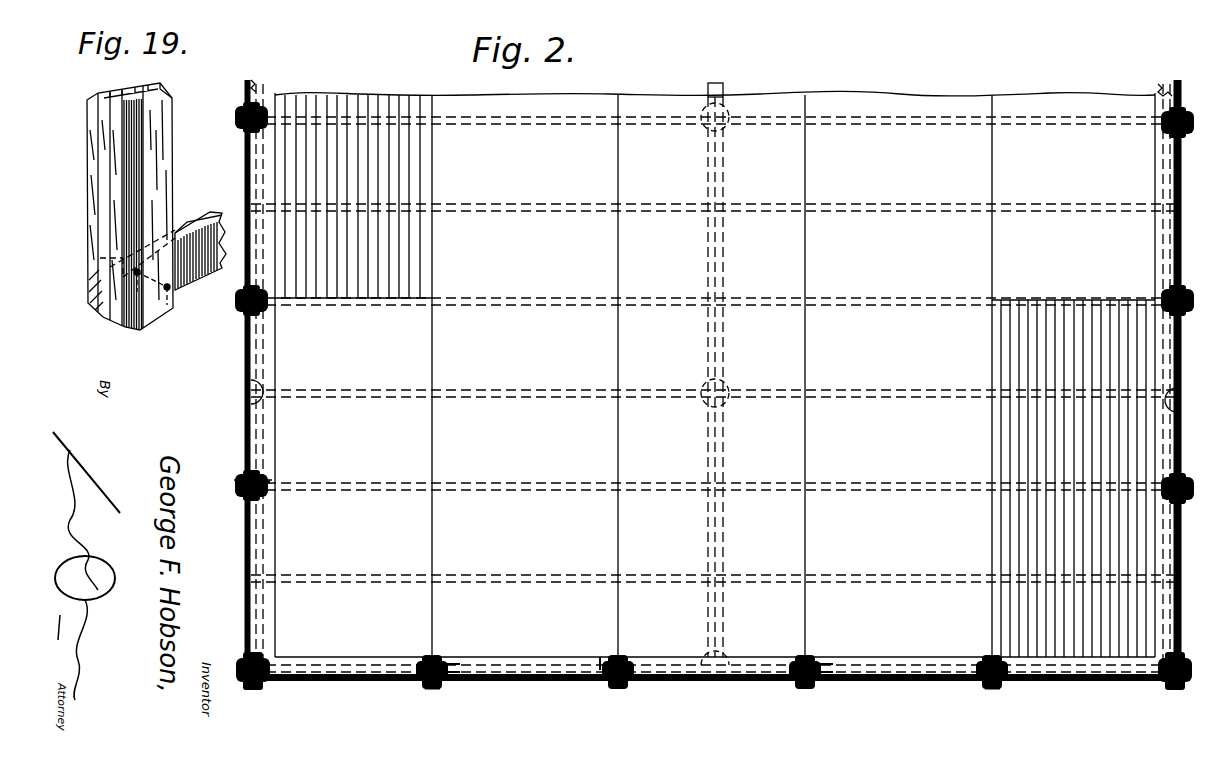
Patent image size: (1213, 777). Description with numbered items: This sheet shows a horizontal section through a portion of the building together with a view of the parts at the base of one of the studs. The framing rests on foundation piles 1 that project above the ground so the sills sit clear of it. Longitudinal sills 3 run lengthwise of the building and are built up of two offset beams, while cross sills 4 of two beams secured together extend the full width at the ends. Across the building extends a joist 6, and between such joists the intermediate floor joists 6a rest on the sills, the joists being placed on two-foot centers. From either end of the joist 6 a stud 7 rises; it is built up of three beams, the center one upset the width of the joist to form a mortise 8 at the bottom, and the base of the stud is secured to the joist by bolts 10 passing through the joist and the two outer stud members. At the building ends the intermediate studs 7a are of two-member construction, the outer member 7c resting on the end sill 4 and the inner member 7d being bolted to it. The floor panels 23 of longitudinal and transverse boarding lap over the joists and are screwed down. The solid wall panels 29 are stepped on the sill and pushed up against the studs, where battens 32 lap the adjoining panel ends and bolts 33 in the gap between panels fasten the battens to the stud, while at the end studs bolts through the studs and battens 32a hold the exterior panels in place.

In FIG. 2, the foundation pile 1 is at (242, 112).
In FIG. 2, the longitudinal sill 3 is at (725, 358).
In FIG. 2, the cross sill 4 is at (768, 670).
In FIG. 19, the joist 6 is at (213, 213).
In FIG. 2, the joist 6 is at (893, 299).
In FIG. 2, the intermediate floor joist 6a is at (658, 206).
In FIG. 19, the stud 7 is at (87, 150).
In FIG. 2, the stud 7 is at (245, 135).
In FIG. 2, the end intermediate stud 7a is at (612, 662).
In FIG. 2, the outer member 7c is at (447, 685).
In FIG. 2, the inner member 7d is at (450, 664).
In FIG. 19, the mortise 8 is at (102, 291).
In FIG. 19, the bolt 10 is at (170, 291).
In FIG. 2, the floor panel 23 is at (364, 84).
In FIG. 2, the solid panel 29 is at (244, 360).
In FIG. 2, the batten 32 is at (244, 494).
In FIG. 2, the batten 32a is at (428, 690).
In FIG. 2, the bolt 33 is at (236, 483).